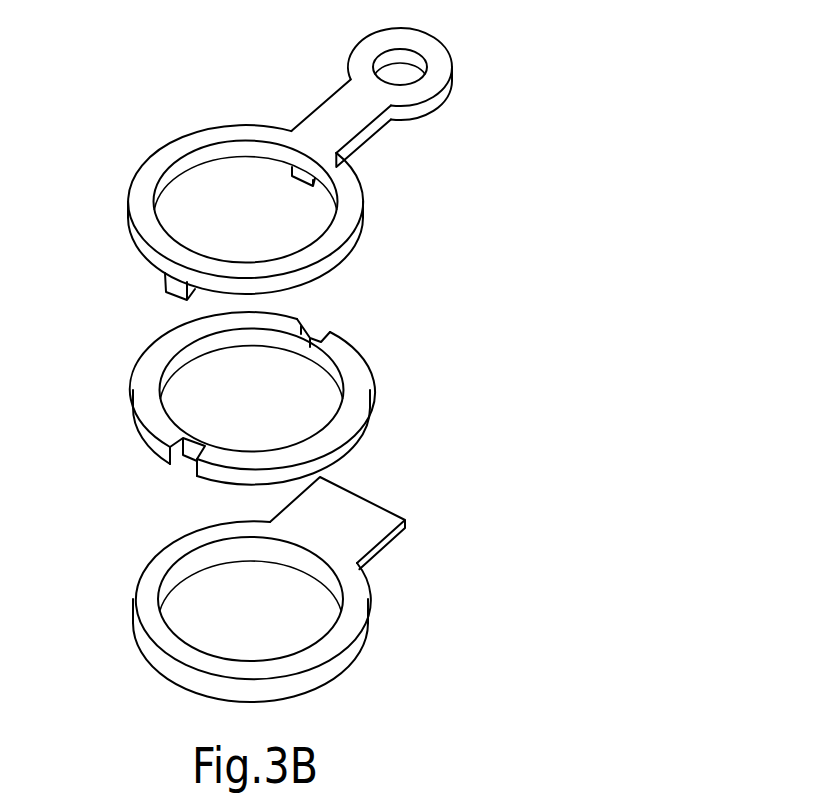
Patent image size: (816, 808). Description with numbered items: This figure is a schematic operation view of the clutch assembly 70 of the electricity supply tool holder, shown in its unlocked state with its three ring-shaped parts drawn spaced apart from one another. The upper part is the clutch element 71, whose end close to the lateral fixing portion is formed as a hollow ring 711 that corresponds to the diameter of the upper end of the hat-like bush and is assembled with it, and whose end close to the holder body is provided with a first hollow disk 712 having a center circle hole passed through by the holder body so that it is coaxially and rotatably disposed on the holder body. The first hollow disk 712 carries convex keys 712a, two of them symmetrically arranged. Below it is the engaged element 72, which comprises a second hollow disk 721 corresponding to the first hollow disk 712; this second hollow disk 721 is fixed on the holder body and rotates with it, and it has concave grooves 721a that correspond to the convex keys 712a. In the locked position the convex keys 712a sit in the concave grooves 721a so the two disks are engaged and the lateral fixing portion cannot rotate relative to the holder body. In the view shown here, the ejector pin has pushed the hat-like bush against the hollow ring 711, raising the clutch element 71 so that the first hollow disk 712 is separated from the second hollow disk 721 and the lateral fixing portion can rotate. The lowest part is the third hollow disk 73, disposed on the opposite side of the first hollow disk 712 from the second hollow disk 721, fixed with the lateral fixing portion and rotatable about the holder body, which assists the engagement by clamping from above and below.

The clutch assembly 70 is at (291, 359).
The clutch element 71 is at (152, 150).
The hollow ring 711 is at (425, 85).
The first hollow disk 712 is at (220, 130).
The convex key 712a is at (175, 287).
The engaged element 72 is at (133, 362).
The second hollow disk 721 is at (355, 402).
The concave groove 721a is at (315, 336).
The third hollow disk 73 is at (135, 602).